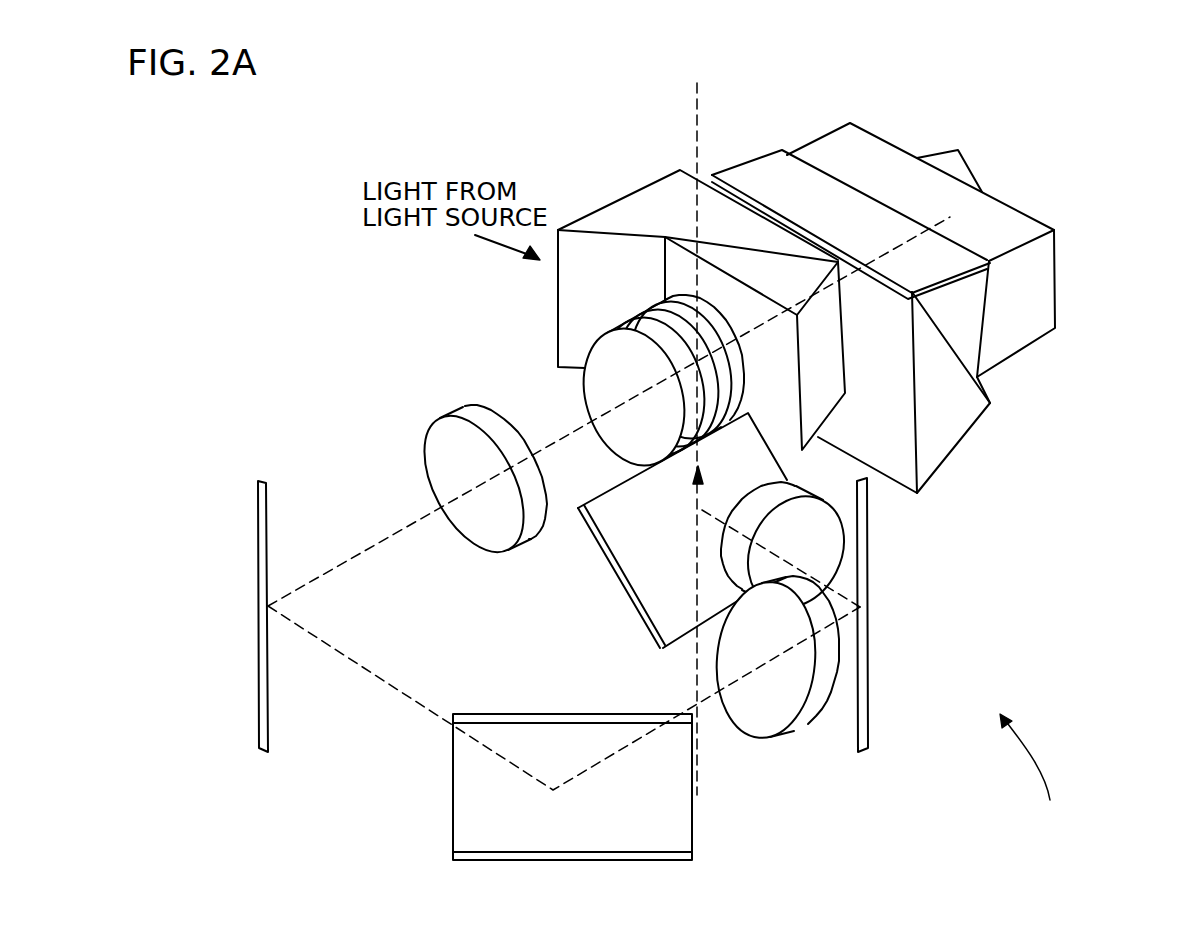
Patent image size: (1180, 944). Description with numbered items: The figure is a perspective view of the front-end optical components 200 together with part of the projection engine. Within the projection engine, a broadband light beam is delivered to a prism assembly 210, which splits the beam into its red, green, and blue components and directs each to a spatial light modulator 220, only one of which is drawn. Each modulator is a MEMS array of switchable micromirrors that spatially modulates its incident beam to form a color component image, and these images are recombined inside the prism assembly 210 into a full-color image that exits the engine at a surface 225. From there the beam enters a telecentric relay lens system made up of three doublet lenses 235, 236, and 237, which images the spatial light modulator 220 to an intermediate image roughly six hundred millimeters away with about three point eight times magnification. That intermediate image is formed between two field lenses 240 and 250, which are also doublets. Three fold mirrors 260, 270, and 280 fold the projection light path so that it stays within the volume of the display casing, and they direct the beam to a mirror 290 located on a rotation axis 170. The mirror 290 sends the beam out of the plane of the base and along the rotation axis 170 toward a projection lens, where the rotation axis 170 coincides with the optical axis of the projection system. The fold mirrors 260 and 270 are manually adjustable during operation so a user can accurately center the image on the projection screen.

The rotation axis 170 is at (697, 103).
The front-end optical components 200 is at (1032, 765).
The prism assembly 210 is at (1023, 268).
The spatial light modulator 220 is at (953, 165).
The surface 225 is at (750, 380).
The doublet lens 235 is at (660, 300).
The doublet lens 236 is at (613, 383).
The doublet lens 237 is at (453, 472).
The field lens 240 is at (770, 700).
The field lens 250 is at (812, 532).
The fold mirror 260 is at (262, 708).
The fold mirror 270 is at (662, 820).
The fold mirror 280 is at (864, 558).
The mirror 290 is at (632, 548).